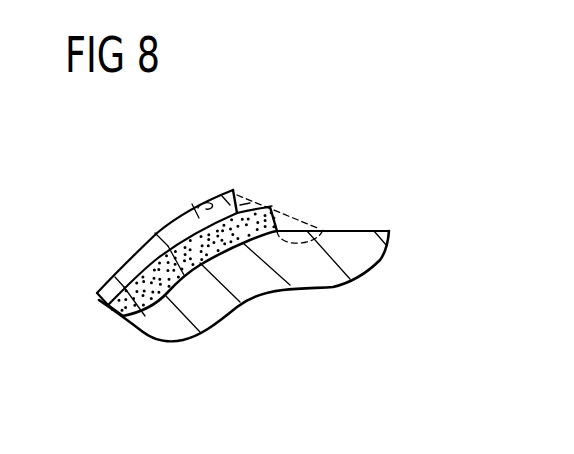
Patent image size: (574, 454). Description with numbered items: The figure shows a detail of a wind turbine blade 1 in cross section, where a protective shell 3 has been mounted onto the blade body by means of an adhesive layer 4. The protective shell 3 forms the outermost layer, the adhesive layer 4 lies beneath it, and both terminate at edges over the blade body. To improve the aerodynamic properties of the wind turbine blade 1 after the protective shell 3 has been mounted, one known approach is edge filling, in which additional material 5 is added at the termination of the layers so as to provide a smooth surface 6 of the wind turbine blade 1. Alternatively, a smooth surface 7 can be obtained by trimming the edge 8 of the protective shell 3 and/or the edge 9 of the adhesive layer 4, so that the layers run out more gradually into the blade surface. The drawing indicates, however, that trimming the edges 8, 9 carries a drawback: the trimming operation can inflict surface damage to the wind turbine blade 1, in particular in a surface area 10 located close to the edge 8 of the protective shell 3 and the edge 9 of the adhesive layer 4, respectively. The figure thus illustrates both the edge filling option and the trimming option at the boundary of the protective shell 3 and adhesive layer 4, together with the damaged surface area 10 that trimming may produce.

The wind turbine blade 1 is at (353, 243).
The protective shell 3 is at (156, 236).
The adhesive layer 4 is at (140, 277).
The additional material 5 is at (247, 203).
The smooth surface 6 is at (292, 208).
The smooth surface 7 is at (195, 207).
The edge of the protective shell 8 is at (228, 198).
The edge of the adhesive layer 9 is at (268, 205).
The surface area 10 is at (322, 229).